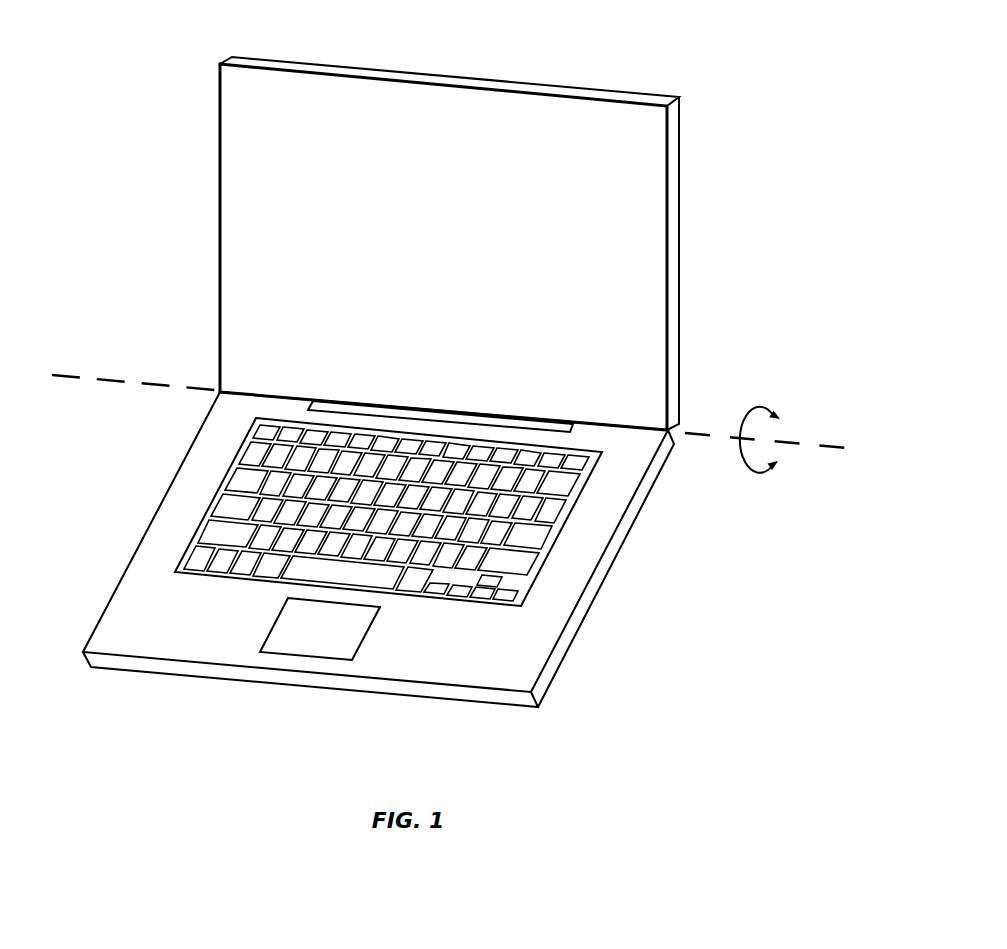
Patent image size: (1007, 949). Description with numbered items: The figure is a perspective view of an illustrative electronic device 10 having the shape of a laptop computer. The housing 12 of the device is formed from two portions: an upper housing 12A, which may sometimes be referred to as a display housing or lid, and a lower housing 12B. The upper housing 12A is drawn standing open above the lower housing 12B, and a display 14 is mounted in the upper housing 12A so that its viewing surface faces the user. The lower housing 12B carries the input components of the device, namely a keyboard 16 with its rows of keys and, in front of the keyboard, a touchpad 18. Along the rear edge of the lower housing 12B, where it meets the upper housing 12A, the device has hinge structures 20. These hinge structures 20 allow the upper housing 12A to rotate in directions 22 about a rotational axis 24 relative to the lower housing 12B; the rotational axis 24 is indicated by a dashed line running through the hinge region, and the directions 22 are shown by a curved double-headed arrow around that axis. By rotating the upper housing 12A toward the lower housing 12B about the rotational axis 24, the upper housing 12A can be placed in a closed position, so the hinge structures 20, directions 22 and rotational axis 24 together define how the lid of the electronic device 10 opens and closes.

The electronic device 10 is at (741, 67).
The housing 12 is at (680, 367).
The upper housing 12A is at (208, 67).
The lower housing 12B is at (197, 397).
The display 14 is at (590, 234).
The keyboard 16 is at (557, 540).
The touchpad 18 is at (328, 657).
The hinge structures 20 is at (543, 417).
The directions 22 is at (758, 475).
The rotational axis 24 is at (70, 373).